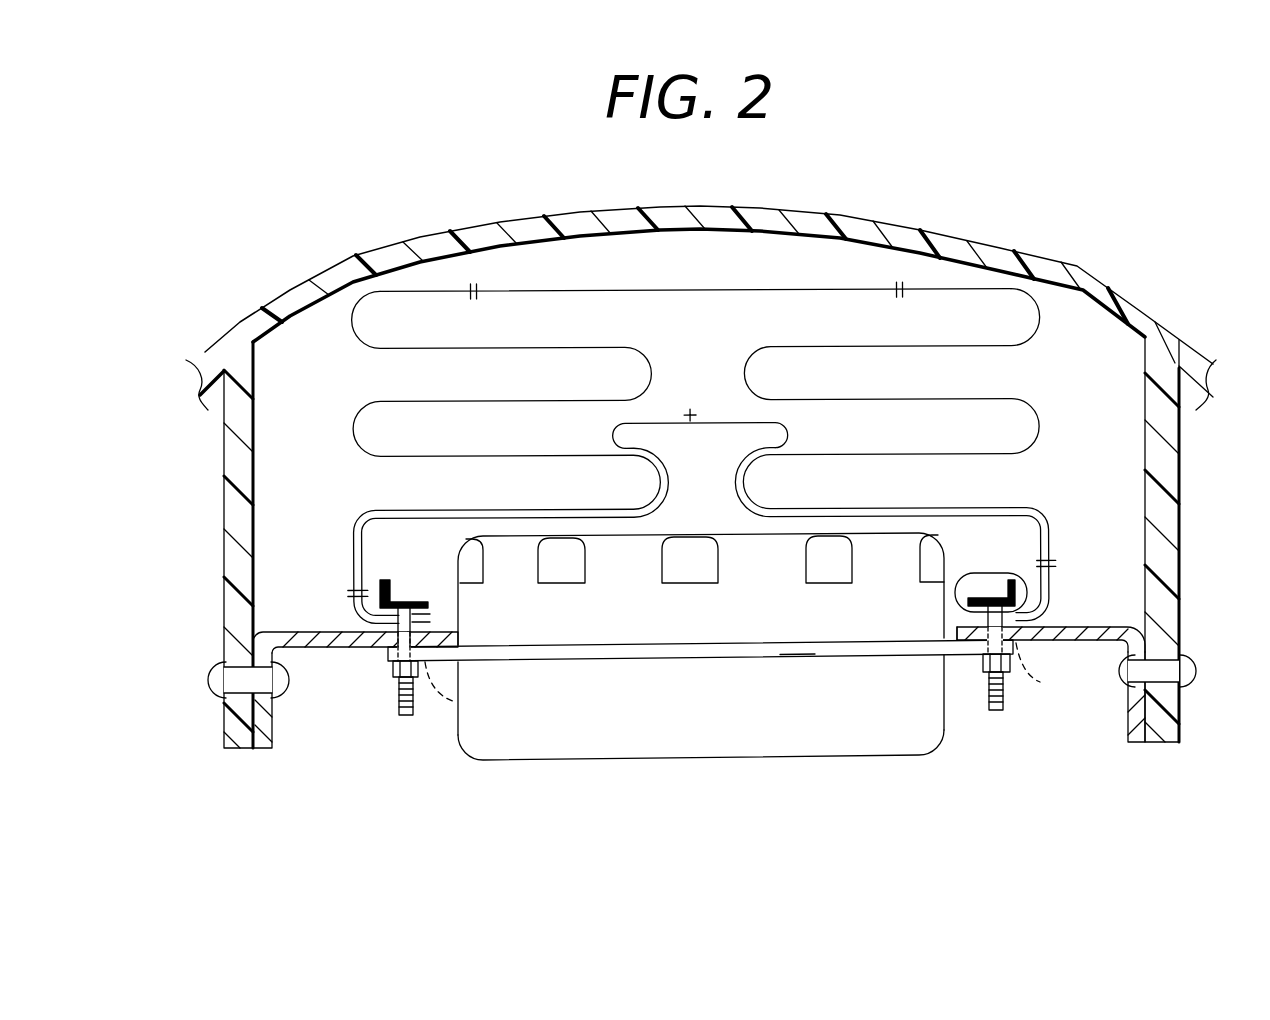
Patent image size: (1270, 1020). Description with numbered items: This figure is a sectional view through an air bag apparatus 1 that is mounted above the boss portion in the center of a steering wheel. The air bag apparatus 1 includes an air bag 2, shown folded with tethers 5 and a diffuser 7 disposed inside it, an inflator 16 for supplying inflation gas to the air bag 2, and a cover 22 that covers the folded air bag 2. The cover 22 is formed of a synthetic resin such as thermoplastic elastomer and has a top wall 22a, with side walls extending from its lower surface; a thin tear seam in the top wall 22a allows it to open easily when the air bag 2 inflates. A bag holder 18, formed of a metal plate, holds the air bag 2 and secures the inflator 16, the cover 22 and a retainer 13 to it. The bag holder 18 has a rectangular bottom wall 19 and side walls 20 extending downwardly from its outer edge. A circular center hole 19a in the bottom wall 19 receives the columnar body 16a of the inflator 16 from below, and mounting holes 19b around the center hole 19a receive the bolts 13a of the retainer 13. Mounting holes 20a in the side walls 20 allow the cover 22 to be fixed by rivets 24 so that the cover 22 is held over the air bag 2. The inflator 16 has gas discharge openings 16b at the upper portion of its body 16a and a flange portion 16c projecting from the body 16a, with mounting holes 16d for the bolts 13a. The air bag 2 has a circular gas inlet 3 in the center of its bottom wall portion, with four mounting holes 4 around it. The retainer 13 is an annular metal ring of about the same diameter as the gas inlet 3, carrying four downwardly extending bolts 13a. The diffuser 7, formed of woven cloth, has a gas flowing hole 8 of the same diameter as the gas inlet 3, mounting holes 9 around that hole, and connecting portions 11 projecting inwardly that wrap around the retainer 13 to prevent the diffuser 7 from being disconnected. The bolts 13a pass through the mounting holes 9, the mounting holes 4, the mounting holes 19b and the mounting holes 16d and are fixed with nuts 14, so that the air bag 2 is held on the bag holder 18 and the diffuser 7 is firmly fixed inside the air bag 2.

The air bag apparatus 1 is at (1065, 825).
The air bag 2 is at (720, 287).
The gas inlet 3 is at (440, 624).
The mounting holes 4 is at (388, 655).
The tethers 5 is at (395, 314).
The diffuser 7 is at (663, 422).
The gas flowing hole 8 is at (440, 617).
The mounting holes 9 is at (400, 580).
The connecting portions 11 is at (987, 573).
The retainer 13 is at (380, 580).
The bolts 13a is at (405, 716).
The nuts 14 is at (423, 677).
The inflator 16 is at (634, 772).
The body 16a is at (698, 738).
The gas discharge openings 16b is at (693, 584).
The flange portion 16c is at (797, 655).
The mounting holes 16d is at (455, 698).
The bag holder 18 is at (288, 617).
The bottom wall 19 is at (1082, 627).
The center hole 19a is at (945, 634).
The mounting holes 19b is at (1052, 677).
The side walls 20 is at (268, 750).
The mounting holes 20a is at (1122, 685).
The cover 22 is at (1080, 256).
The top wall 22a is at (930, 238).
The rivets 24 is at (1197, 673).